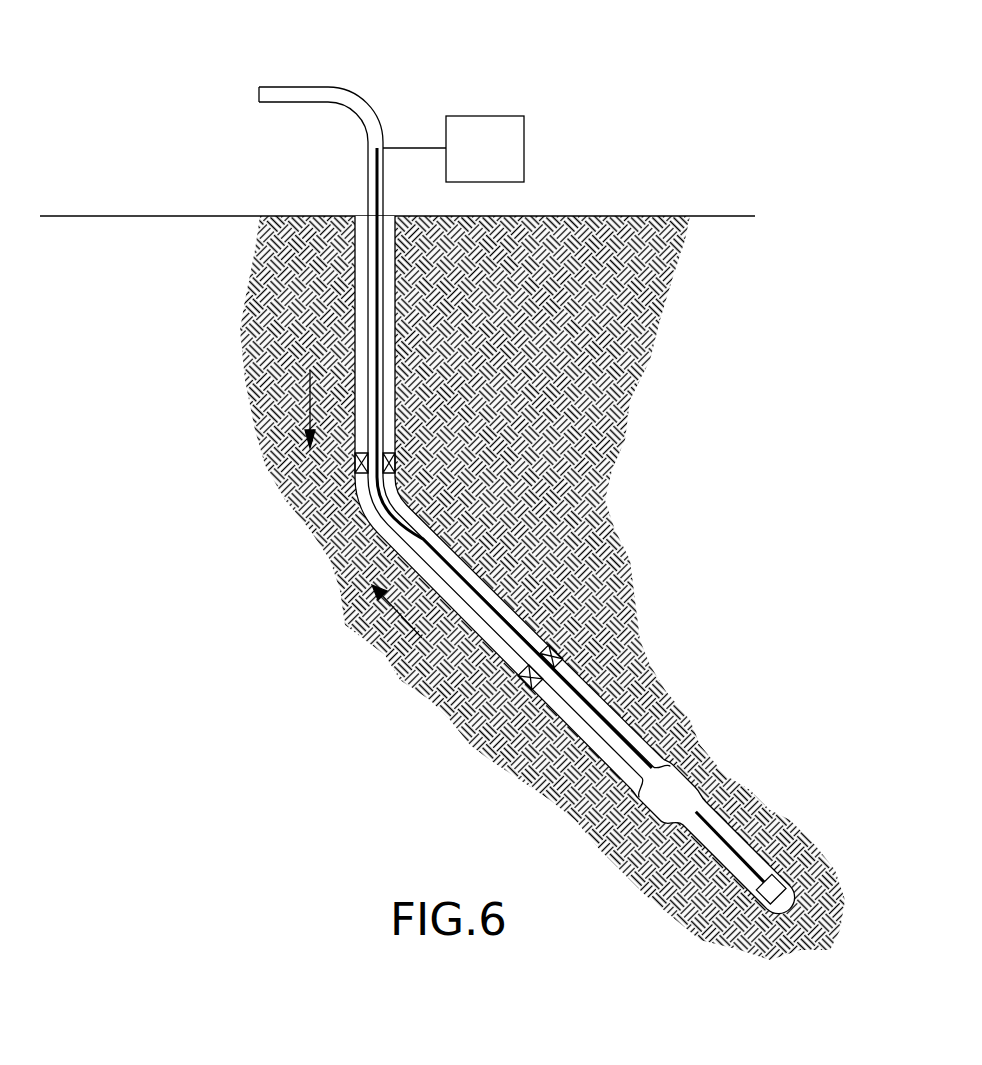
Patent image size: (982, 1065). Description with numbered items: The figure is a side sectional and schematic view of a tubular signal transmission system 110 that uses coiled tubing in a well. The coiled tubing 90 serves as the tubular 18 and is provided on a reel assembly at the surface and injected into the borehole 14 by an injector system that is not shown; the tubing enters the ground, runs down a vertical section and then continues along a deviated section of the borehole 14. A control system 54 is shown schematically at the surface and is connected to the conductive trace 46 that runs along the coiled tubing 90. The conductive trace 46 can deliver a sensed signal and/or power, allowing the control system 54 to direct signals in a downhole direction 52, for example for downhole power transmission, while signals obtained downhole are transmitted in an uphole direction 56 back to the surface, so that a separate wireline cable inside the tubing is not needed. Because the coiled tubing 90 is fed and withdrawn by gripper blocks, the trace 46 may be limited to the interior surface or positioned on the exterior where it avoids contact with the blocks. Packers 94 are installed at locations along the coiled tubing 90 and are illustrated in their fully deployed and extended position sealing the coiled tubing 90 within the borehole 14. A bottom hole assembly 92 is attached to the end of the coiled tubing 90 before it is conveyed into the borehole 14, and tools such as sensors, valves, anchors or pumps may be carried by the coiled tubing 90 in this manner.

The tubular signal transmission system 110 is at (556, 108).
The tubular 18 is at (347, 92).
The control system 54 is at (503, 168).
The conductive trace 46 is at (382, 285).
The coiled tubing 90 is at (382, 349).
The borehole 14 is at (395, 419).
The packers 94 is at (395, 462).
The downhole direction 52 is at (292, 409).
The uphole direction 56 is at (397, 621).
The bottom hole assembly 92 is at (782, 877).